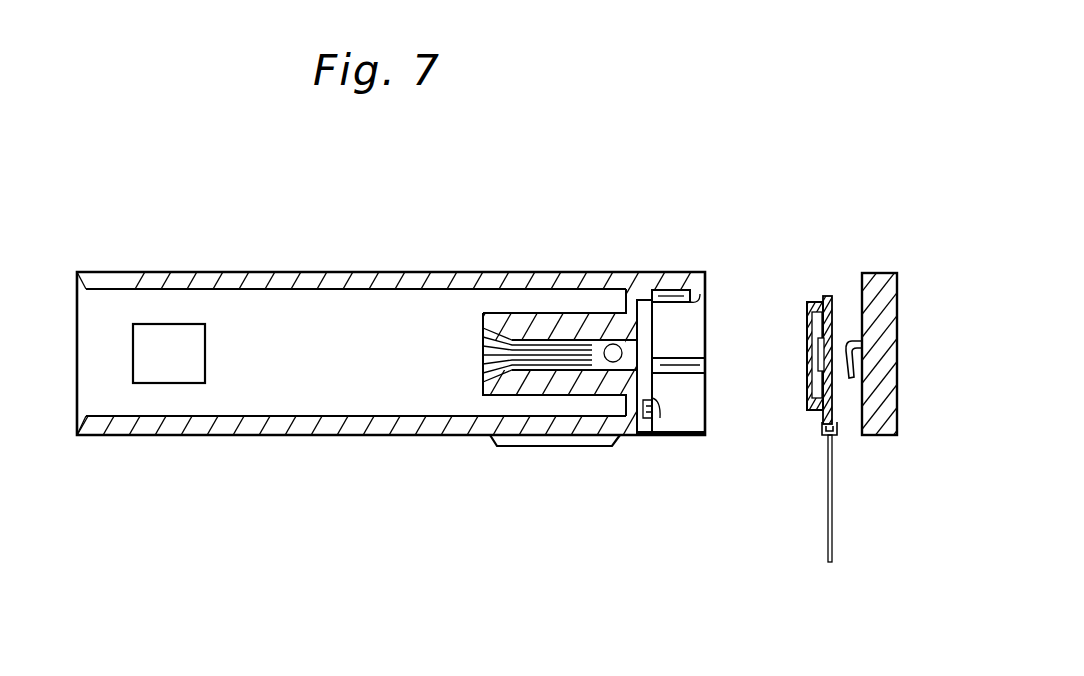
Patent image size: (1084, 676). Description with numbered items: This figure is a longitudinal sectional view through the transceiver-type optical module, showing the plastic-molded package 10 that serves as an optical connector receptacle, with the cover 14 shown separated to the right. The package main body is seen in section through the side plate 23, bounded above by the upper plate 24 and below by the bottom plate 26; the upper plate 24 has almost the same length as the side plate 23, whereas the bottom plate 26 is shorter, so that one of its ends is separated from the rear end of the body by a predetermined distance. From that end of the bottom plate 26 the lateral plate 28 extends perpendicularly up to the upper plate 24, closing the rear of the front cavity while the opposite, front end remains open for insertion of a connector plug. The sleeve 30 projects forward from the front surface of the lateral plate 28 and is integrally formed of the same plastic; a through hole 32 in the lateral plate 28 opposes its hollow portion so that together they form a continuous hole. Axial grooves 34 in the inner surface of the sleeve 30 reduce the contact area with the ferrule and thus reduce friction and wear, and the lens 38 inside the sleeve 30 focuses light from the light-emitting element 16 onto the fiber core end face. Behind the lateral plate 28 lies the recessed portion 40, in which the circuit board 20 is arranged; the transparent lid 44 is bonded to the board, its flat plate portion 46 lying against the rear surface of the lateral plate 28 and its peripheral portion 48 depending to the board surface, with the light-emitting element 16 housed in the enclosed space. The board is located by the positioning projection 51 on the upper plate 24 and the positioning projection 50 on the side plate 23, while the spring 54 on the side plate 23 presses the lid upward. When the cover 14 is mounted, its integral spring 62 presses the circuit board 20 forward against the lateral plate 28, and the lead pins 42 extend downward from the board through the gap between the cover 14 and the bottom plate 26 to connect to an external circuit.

The package 10 is at (632, 246).
The cover 14 is at (887, 273).
The light-emitting element 16 is at (819, 358).
The circuit board 20 is at (826, 298).
The side plate 23 is at (278, 317).
The upper plate 24 is at (393, 277).
The bottom plate 26 is at (330, 430).
The lateral plate 28 is at (613, 448).
The sleeve 30 is at (527, 313).
The through hole 32 is at (617, 344).
The grooves 34 is at (483, 335).
The lens 38 is at (600, 396).
The recessed portion 40 is at (683, 423).
The lead pins 42 is at (832, 528).
The transparent lid 44 is at (807, 305).
The flat plate portion 46 is at (808, 352).
The peripheral portion 48 is at (815, 413).
The positioning projection 50 is at (690, 373).
The positioning projection 51 is at (700, 290).
The spring 54 is at (655, 420).
The spring 62 is at (858, 345).